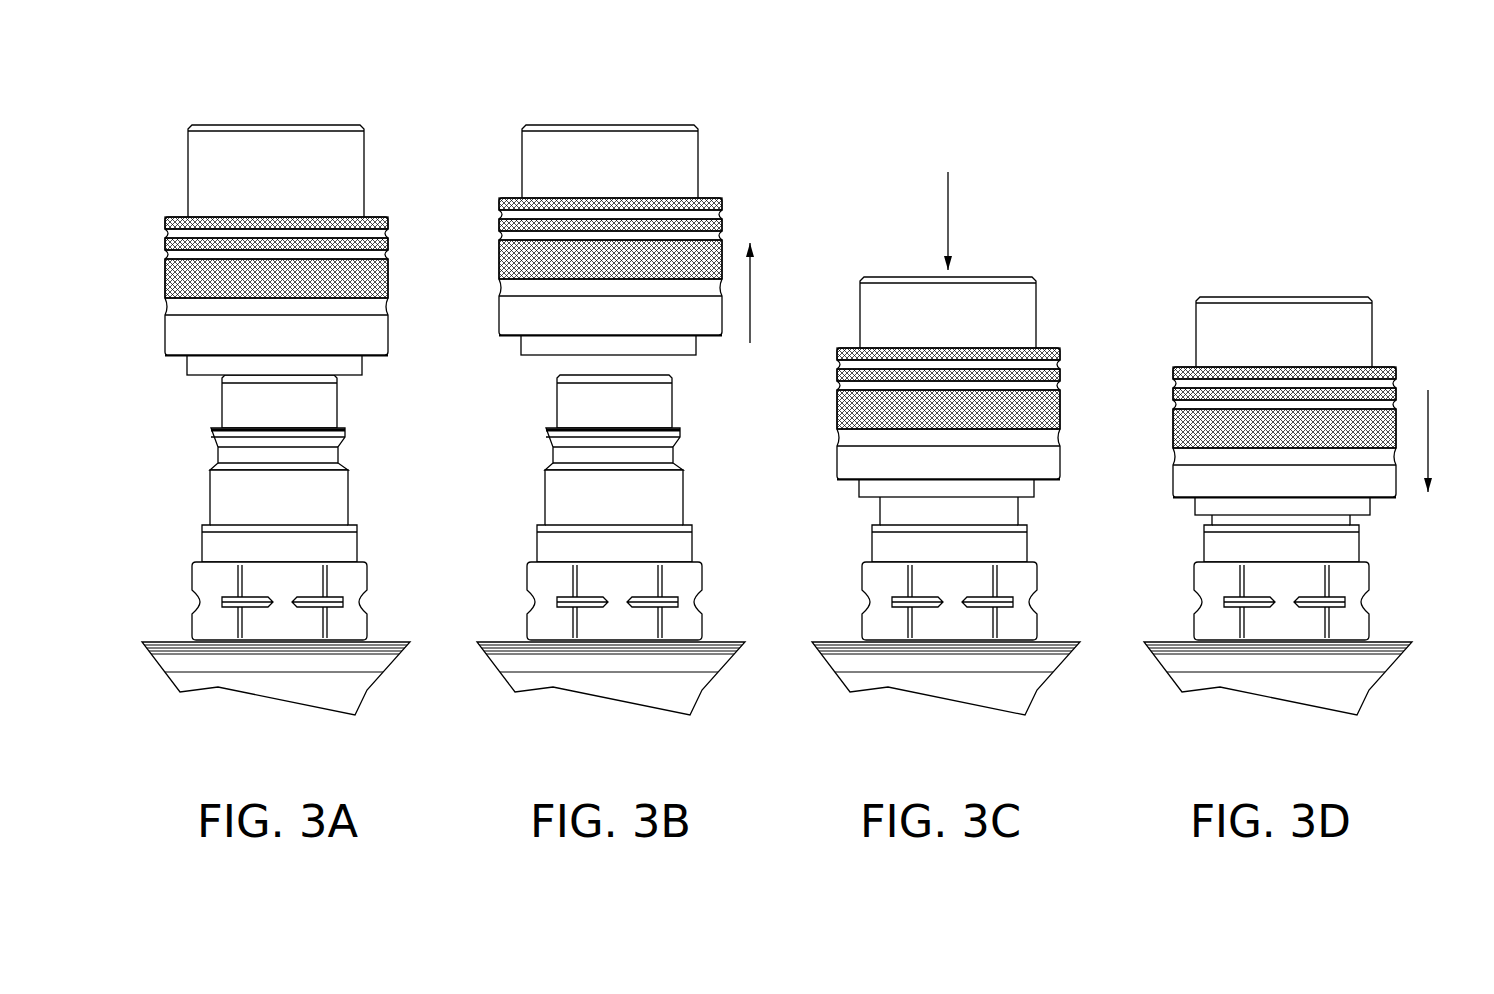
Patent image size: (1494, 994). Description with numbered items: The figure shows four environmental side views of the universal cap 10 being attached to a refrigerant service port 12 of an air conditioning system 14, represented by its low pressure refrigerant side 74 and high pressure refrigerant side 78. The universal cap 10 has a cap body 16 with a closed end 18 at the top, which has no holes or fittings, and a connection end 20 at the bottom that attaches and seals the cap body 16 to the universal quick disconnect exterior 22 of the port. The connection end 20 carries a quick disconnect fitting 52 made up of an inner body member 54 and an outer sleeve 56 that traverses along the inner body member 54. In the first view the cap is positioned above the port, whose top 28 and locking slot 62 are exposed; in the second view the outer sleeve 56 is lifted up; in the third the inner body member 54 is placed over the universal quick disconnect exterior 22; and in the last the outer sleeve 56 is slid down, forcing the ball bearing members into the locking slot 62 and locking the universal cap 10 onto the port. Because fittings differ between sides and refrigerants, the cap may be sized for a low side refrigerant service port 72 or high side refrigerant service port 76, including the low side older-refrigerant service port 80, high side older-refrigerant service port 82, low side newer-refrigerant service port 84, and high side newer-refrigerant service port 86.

In FIG. 3A, the universal cap 10 is at (347, 86).
In FIG. 3B, the universal cap 10 is at (714, 100).
In FIG. 3C, the universal cap 10 is at (1043, 216).
In FIG. 3D, the universal cap 10 is at (1387, 273).
In FIG. 3A, the refrigerant service port 12 is at (167, 532).
In FIG. 3B, the refrigerant service port 12 is at (495, 540).
In FIG. 3C, the refrigerant service port 12 is at (826, 550).
In FIG. 3D, the refrigerant service port 12 is at (1339, 507).
In FIG. 3A, the air conditioning system 14 is at (158, 692).
In FIG. 3B, the air conditioning system 14 is at (493, 690).
In FIG. 3C, the air conditioning system 14 is at (808, 688).
In FIG. 3D, the air conditioning system 14 is at (1150, 687).
In FIG. 3A, the cap body 16 is at (285, 260).
In FIG. 3B, the cap body 16 is at (614, 243).
In FIG. 3C, the cap body 16 is at (926, 401).
In FIG. 3D, the cap body 16 is at (1276, 412).
In FIG. 3A, the closed end 18 is at (276, 127).
In FIG. 3B, the closed end 18 is at (610, 124).
In FIG. 3C, the closed end 18 is at (946, 275).
In FIG. 3D, the closed end 18 is at (1284, 293).
In FIG. 3A, the connection end 20 is at (273, 255).
In FIG. 3B, the connection end 20 is at (586, 380).
In FIG. 3C, the connection end 20 is at (945, 469).
In FIG. 3D, the connection end 20 is at (1275, 406).
In FIG. 3A, the universal quick disconnect exterior 22 is at (172, 466).
In FIG. 3B, the universal quick disconnect exterior 22 is at (567, 508).
In FIG. 3C, the universal quick disconnect exterior 22 is at (995, 516).
In FIG. 3D, the universal quick disconnect exterior 22 is at (1330, 516).
In FIG. 3A, the top 28 is at (325, 374).
In FIG. 3B, the top 28 is at (643, 389).
In FIG. 3C, the top 28 is at (949, 401).
In FIG. 3D, the top 28 is at (1281, 401).
In FIG. 3A, the quick disconnect fitting 52 is at (245, 319).
In FIG. 3B, the quick disconnect fitting 52 is at (576, 315).
In FIG. 3C, the quick disconnect fitting 52 is at (902, 470).
In FIG. 3D, the quick disconnect fitting 52 is at (1250, 472).
In FIG. 3A, the inner body member 54 is at (304, 243).
In FIG. 3B, the inner body member 54 is at (573, 357).
In FIG. 3C, the inner body member 54 is at (983, 461).
In FIG. 3D, the inner body member 54 is at (1314, 399).
In FIG. 3A, the outer sleeve 56 is at (319, 272).
In FIG. 3B, the outer sleeve 56 is at (648, 239).
In FIG. 3C, the outer sleeve 56 is at (972, 368).
In FIG. 3D, the outer sleeve 56 is at (1313, 388).
In FIG. 3A, the locking slot 62 is at (206, 452).
In FIG. 3B, the locking slot 62 is at (589, 473).
In FIG. 3C, the locking slot 62 is at (949, 449).
In FIG. 3D, the locking slot 62 is at (1281, 449).
In FIG. 3A, the low side refrigerant service port 72 is at (349, 593).
In FIG. 3B, the low side refrigerant service port 72 is at (681, 599).
In FIG. 3C, the low side refrigerant service port 72 is at (1014, 599).
In FIG. 3D, the low side refrigerant service port 72 is at (1339, 599).
In FIG. 3A, the high side refrigerant service port 76 is at (349, 593).
In FIG. 3B, the high side refrigerant service port 76 is at (681, 599).
In FIG. 3C, the high side refrigerant service port 76 is at (1014, 599).
In FIG. 3D, the high side refrigerant service port 76 is at (1339, 599).
In FIG. 3A, the low side HFC-134a refrigerant service port 80 is at (349, 593).
In FIG. 3B, the low side HFC-134a refrigerant service port 80 is at (681, 599).
In FIG. 3C, the low side HFC-134a refrigerant service port 80 is at (1014, 599).
In FIG. 3D, the low side HFC-134a refrigerant service port 80 is at (1339, 599).
In FIG. 3A, the high side HFC-134a refrigerant service port 82 is at (349, 593).
In FIG. 3B, the high side HFC-134a refrigerant service port 82 is at (681, 599).
In FIG. 3C, the high side HFC-134a refrigerant service port 82 is at (1014, 599).
In FIG. 3D, the high side HFC-134a refrigerant service port 82 is at (1339, 599).
In FIG. 3A, the low side 1234yf refrigerant service port 84 is at (349, 593).
In FIG. 3B, the low side 1234yf refrigerant service port 84 is at (681, 599).
In FIG. 3C, the low side 1234yf refrigerant service port 84 is at (1014, 599).
In FIG. 3D, the low side 1234yf refrigerant service port 84 is at (1339, 599).
In FIG. 3A, the high side 1234yf refrigerant service port 86 is at (447, 607).
In FIG. 3B, the high side 1234yf refrigerant service port 86 is at (681, 599).
In FIG. 3C, the high side 1234yf refrigerant service port 86 is at (1014, 599).
In FIG. 3D, the high side 1234yf refrigerant service port 86 is at (1339, 599).
In FIG. 3A, the low pressure refrigerant side 74 is at (276, 700).
In FIG. 3B, the low pressure refrigerant side 74 is at (611, 701).
In FIG. 3C, the low pressure refrigerant side 74 is at (946, 702).
In FIG. 3D, the low pressure refrigerant side 74 is at (1278, 705).
In FIG. 3A, the high pressure refrigerant side 78 is at (290, 690).
In FIG. 3B, the high pressure refrigerant side 78 is at (635, 690).
In FIG. 3C, the high pressure refrigerant side 78 is at (980, 698).
In FIG. 3D, the high pressure refrigerant side 78 is at (1337, 705).